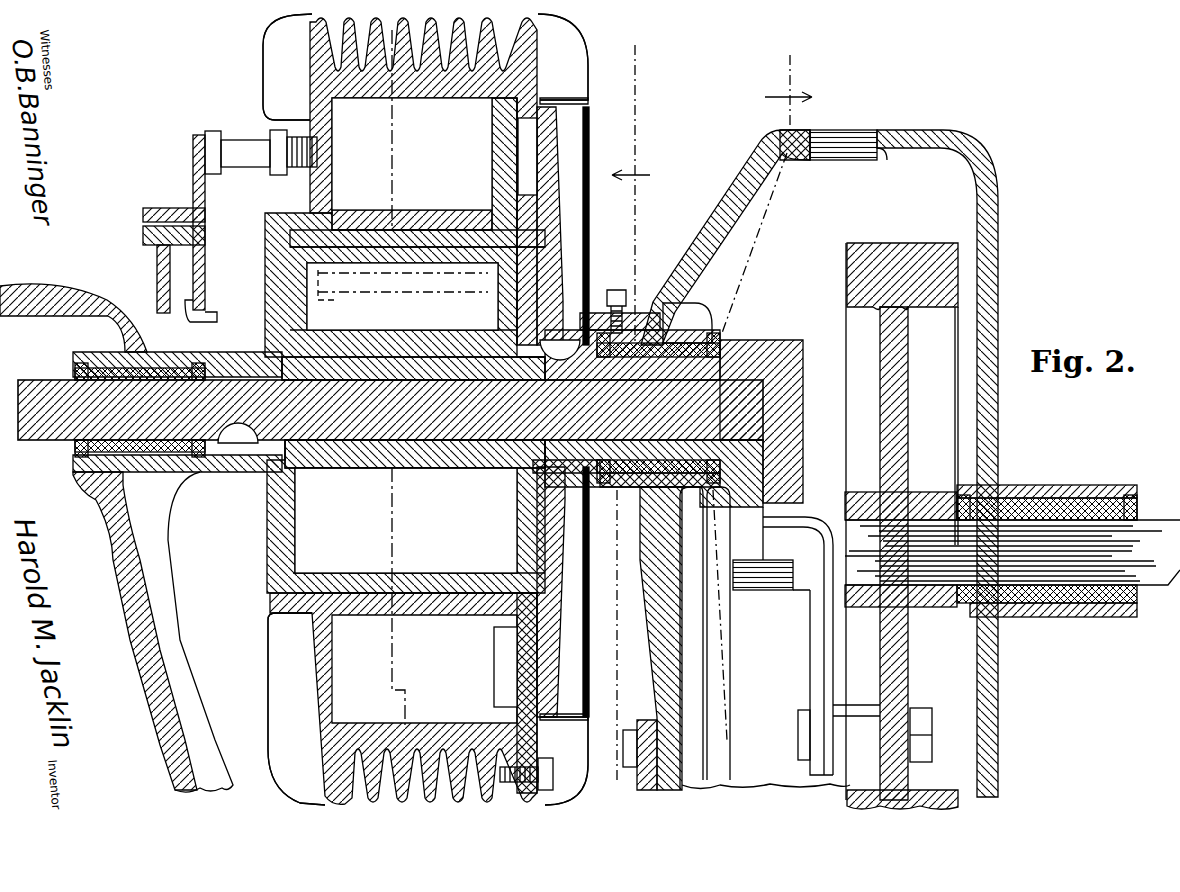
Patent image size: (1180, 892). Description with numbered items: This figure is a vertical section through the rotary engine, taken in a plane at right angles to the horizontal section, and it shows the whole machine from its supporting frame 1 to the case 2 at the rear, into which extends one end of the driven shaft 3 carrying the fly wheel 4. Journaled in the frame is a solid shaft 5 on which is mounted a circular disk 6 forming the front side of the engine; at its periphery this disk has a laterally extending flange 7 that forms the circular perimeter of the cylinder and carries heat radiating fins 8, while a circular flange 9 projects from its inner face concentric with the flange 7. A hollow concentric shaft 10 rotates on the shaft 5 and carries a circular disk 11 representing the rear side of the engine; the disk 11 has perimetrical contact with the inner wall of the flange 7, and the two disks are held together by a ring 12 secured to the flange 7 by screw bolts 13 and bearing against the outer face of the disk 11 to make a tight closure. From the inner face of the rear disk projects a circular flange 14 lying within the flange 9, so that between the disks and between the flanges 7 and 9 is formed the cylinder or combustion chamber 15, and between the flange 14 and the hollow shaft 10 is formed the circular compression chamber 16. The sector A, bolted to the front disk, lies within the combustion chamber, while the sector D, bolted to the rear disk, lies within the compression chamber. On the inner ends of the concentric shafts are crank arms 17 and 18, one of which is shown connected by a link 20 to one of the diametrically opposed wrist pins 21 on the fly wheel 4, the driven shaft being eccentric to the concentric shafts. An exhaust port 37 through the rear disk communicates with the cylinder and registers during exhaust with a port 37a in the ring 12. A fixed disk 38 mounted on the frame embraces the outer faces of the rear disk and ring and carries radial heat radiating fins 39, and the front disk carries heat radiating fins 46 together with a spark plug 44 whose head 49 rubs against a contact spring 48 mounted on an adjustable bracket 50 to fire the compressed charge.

The supporting frame 1 is at (120, 607).
The case 2 is at (914, 130).
The driven shaft 3 is at (755, 411).
The fly wheel 4 is at (392, 30).
The solid shaft 5 is at (60, 380).
The circular disk 6 is at (267, 262).
The laterally extending flange 7 is at (410, 110).
The heat radiating fins 8 is at (320, 45).
The circular flange 9 is at (437, 212).
The hollow concentric shaft 10 is at (445, 468).
The circular disk 11 is at (528, 248).
The ring 12 is at (545, 86).
The screw bolts 13 is at (542, 774).
The circular flange 14 is at (448, 268).
The cylinder or combustion chamber 15 is at (412, 130).
The circular compression chamber 16 is at (406, 596).
The crank arm 17 is at (803, 489).
The crank arm 18 is at (757, 585).
The link 20 is at (812, 659).
The wrist pins 21 is at (798, 735).
The exhaust port 37 is at (500, 670).
The port 37a is at (528, 150).
The fixed disk 38 is at (542, 610).
The heat radiating fins 39 is at (583, 212).
The spark plug 44 is at (252, 168).
The heat radiating fins 46 is at (262, 70).
The contact spring 48 is at (193, 155).
The head 49 is at (213, 133).
The adjustable bracket 50 is at (193, 183).
The sector A is at (893, 244).
The sector D is at (497, 312).